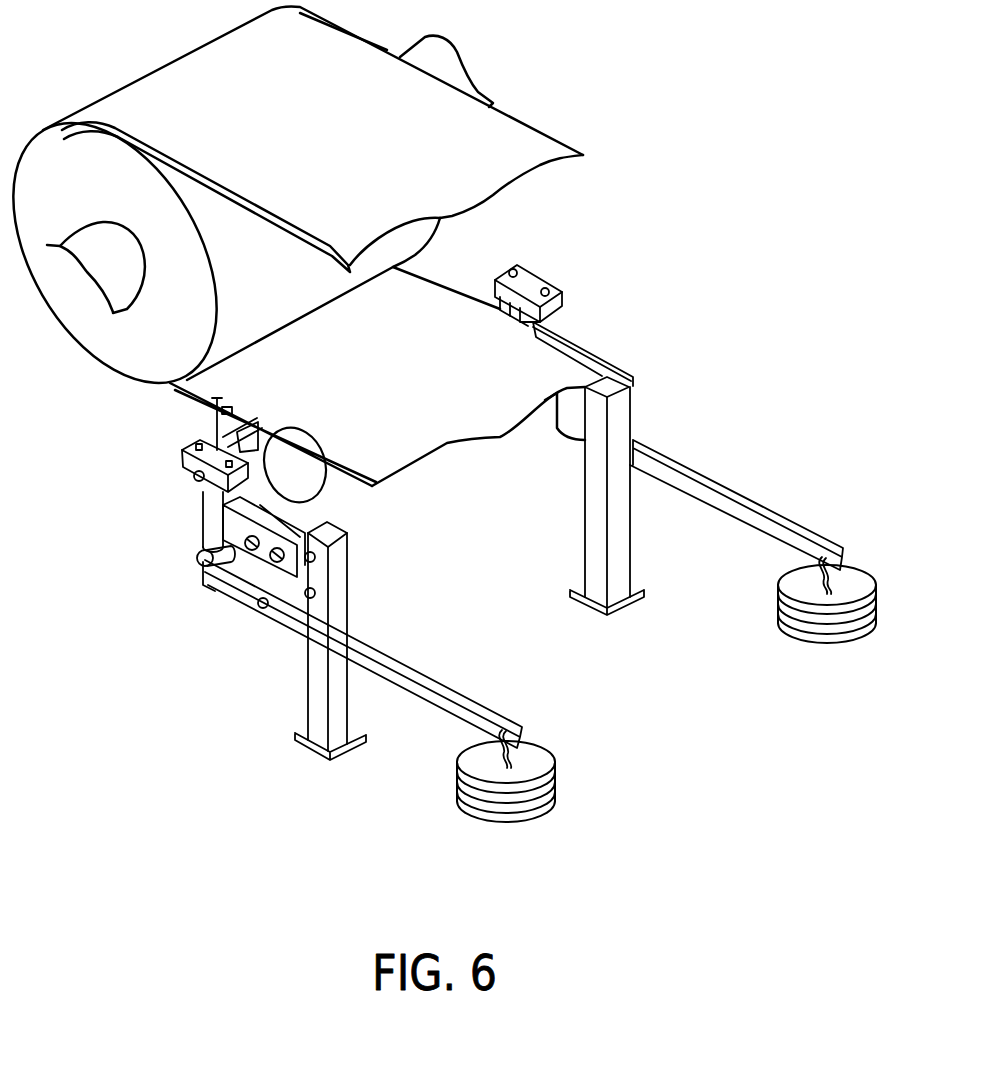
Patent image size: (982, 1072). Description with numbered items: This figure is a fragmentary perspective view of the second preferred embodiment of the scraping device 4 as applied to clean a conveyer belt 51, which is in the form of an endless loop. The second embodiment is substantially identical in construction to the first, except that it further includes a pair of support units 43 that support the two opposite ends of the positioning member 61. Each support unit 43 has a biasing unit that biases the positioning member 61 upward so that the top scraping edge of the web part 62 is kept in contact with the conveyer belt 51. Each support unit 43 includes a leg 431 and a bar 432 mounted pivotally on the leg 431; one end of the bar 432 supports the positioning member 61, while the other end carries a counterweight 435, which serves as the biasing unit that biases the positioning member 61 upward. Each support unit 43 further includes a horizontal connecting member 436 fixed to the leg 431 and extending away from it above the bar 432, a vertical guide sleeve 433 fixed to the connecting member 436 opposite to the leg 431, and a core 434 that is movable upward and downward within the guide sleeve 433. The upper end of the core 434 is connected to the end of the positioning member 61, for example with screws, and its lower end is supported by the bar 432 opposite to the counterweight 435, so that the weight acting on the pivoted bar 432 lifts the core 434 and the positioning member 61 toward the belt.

The scraping device 4 is at (165, 580).
The support unit 43 is at (221, 617).
The conveyer belt 51 is at (400, 452).
The positioning member 61 is at (203, 439).
The web part 62 is at (215, 407).
The leg 431 is at (340, 580).
The bar 432 is at (443, 680).
The vertical guide sleeve 433 is at (196, 527).
The core 434 is at (200, 485).
The counterweight 435 is at (547, 765).
The horizontal connecting member 436 is at (243, 595).